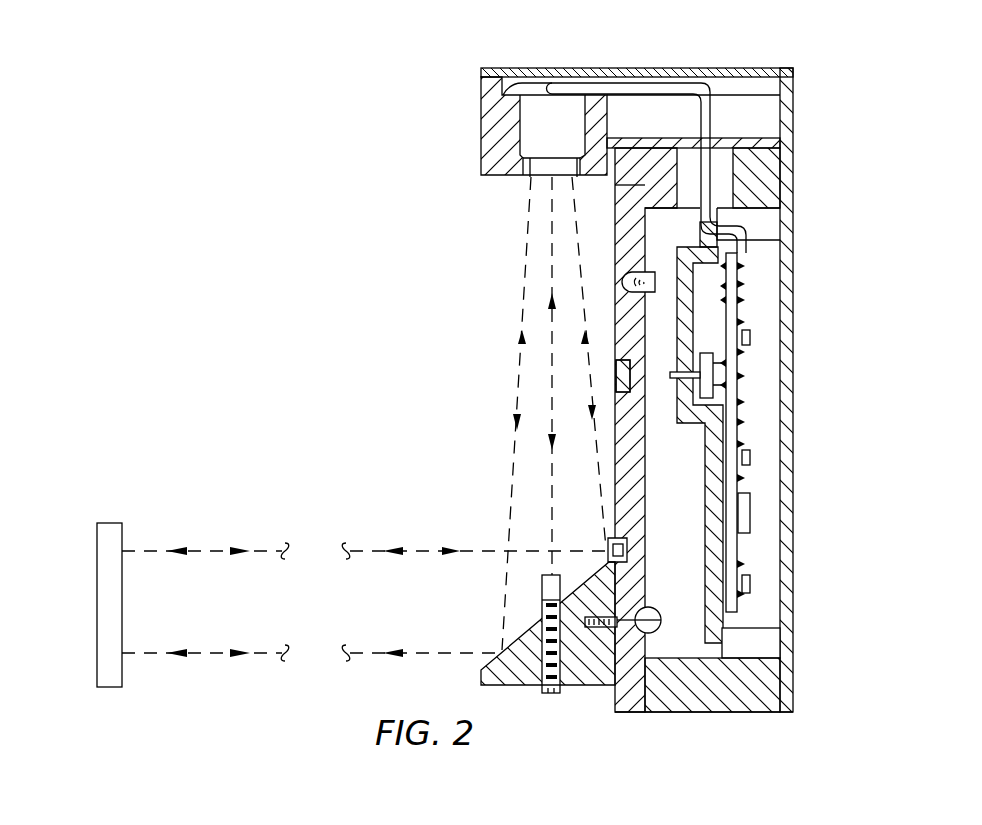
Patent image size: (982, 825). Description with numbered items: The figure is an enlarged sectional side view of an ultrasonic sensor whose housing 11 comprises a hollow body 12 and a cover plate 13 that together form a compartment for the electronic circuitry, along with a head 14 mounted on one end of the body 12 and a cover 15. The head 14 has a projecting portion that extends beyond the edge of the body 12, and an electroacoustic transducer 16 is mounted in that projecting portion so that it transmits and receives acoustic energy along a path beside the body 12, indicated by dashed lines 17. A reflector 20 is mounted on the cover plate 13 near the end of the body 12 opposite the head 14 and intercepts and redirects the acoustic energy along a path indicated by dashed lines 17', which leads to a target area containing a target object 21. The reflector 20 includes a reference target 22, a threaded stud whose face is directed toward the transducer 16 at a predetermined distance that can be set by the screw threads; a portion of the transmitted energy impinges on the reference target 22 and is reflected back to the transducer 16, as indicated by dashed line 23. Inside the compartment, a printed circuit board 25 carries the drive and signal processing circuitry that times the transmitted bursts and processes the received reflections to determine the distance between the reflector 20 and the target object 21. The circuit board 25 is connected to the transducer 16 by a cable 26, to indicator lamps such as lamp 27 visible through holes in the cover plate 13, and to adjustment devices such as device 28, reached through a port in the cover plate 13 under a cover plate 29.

The housing 11 is at (797, 196).
The body 12 is at (793, 674).
The cover plate 13 is at (612, 700).
The head 14 is at (481, 132).
The cover 15 is at (620, 68).
The electroacoustic transducer 16 is at (503, 94).
The dashed lines 17 is at (524, 413).
The dashed lines 17' is at (365, 586).
The reflector 20 is at (540, 620).
The target object 21 is at (124, 540).
The reference target 22 is at (540, 590).
The dashed line 23 is at (550, 475).
The printed circuit board 25 is at (738, 296).
The cable 26 is at (715, 108).
The indicator lamp 27 is at (620, 282).
The adjustment device 28 is at (700, 353).
The cover plate 29 is at (616, 373).